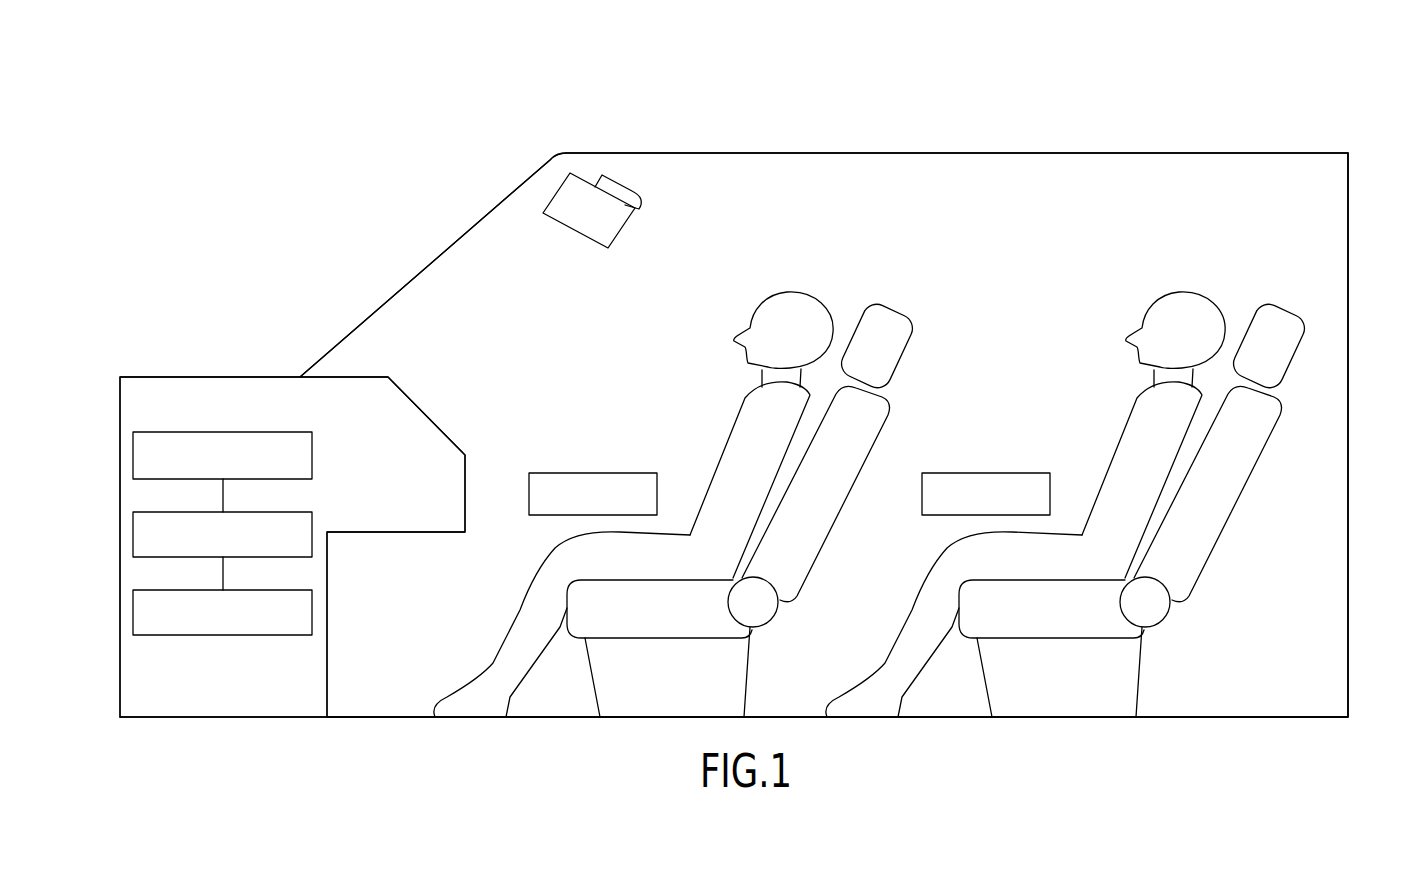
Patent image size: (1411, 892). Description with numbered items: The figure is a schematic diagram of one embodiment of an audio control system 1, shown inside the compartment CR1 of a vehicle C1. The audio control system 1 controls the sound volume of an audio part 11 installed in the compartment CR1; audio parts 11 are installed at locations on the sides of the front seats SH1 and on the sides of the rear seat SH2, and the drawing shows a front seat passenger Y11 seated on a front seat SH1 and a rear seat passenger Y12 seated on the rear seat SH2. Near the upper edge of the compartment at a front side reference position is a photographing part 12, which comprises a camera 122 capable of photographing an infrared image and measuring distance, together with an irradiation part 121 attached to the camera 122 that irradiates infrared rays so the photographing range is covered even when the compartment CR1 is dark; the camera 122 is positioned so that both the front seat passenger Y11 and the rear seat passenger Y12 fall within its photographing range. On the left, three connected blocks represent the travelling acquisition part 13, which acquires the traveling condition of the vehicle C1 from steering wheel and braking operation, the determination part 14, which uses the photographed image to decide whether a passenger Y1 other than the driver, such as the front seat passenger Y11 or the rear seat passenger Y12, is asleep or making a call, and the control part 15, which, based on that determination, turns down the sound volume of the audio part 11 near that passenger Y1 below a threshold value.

The audio control system 1 is at (964, 111).
The audio part 11 is at (610, 473).
The photographing part 12 is at (610, 195).
The irradiation part 121 is at (622, 183).
The camera 122 is at (580, 232).
The travelling acquisition part 13 is at (264, 432).
The determination part 14 is at (264, 512).
The control part 15 is at (264, 590).
The passenger Y1 is at (1094, 113).
The front seat passenger Y11 is at (807, 293).
The rear seat passenger Y12 is at (1199, 293).
The front seat SH1 is at (862, 468).
The rear seat SH2 is at (1253, 468).
The vehicle C1 is at (1295, 155).
The compartment CR1 is at (1316, 244).